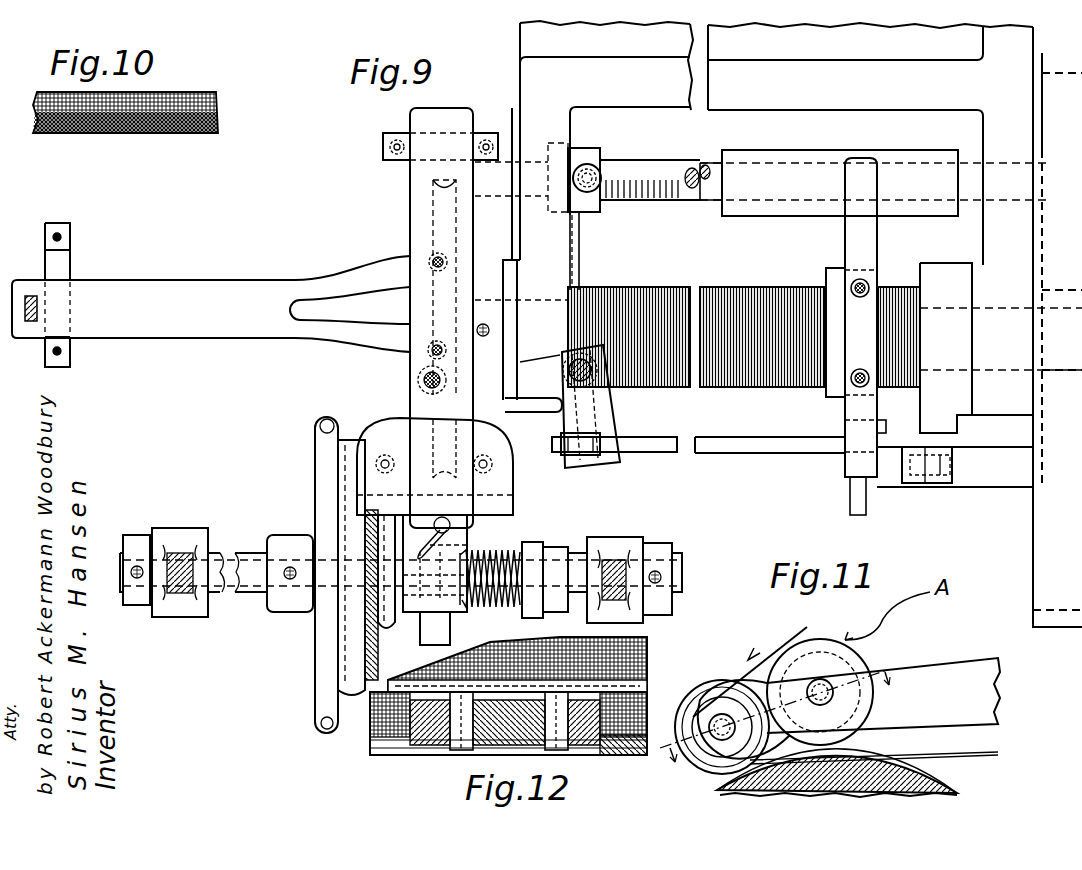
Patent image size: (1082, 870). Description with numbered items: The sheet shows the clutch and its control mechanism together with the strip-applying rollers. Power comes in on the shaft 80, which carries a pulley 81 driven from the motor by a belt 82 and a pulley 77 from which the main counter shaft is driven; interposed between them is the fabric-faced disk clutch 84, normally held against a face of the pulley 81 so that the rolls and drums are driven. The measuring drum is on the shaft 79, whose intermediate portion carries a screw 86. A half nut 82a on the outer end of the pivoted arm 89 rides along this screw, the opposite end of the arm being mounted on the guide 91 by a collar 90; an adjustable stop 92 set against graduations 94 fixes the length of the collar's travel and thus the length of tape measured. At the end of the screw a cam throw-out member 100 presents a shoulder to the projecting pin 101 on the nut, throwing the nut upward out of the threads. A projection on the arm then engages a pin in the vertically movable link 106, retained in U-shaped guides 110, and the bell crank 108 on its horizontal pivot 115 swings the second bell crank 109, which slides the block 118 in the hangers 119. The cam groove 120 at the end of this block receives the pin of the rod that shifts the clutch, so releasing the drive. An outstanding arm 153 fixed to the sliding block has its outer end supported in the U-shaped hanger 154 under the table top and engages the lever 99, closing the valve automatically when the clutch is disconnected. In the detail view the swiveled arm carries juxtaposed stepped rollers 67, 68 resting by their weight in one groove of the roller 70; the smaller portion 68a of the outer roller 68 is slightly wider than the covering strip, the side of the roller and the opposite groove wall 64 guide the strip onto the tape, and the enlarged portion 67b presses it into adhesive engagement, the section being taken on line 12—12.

In FIG. 9, the outstanding arm 153 is at (225, 292).
In FIG. 9, the U-shaped hanger 154 is at (70, 263).
In FIG. 9, the lever 99 is at (37, 308).
In FIG. 9, the hangers 119 is at (395, 162).
In FIG. 9, the horizontally slidable block 118 is at (455, 490).
In FIG. 9, the cam groove 120 is at (455, 555).
In FIG. 9, the shaft 80 is at (250, 598).
In FIG. 9, the pulley 81 is at (315, 683).
In FIG. 9, the belt 82 is at (330, 700).
In FIG. 9, the pulley 77 is at (375, 598).
In FIG. 9, the disk clutch 84 is at (380, 650).
In FIG. 9, the adjustable stop 92 is at (590, 160).
In FIG. 9, the guide 91 is at (680, 200).
In FIG. 9, the graduations 94 is at (665, 188).
In FIG. 9, the screw 86 is at (775, 387).
In FIG. 9, the pivoted arm 89 is at (877, 245).
In FIG. 9, the half nut 82a is at (832, 270).
In FIG. 9, the collar 90 is at (810, 156).
In FIG. 9, the cam throw-out member 100 is at (950, 425).
In FIG. 9, the shaft 79 is at (960, 370).
In FIG. 9, the projecting pin 101 is at (884, 421).
In FIG. 9, the bell crank 108 is at (752, 450).
In FIG. 9, the U-shaped guides 110 is at (970, 485).
In FIG. 9, the vertically movable link 106 is at (935, 483).
In FIG. 9, the second bell crank 109 is at (603, 415).
In FIG. 9, the horizontal pivot 115 is at (588, 458).
In FIG. 11, the groove wall 64 is at (915, 760).
In FIG. 11, the outer roller 68 is at (710, 680).
In FIG. 12, the outer roller 68 is at (415, 690).
In FIG. 11, the smaller portion 68a is at (712, 752).
In FIG. 12, the smaller portion 68a is at (427, 740).
In FIG. 11, the enlarged portion 67b is at (862, 655).
In FIG. 12, the enlarged portion 67b is at (612, 755).
In FIG. 12, the roller 67 is at (645, 693).
In FIG. 11, the section line 12— 12 is at (785, 714).
In FIG. 11, the grooved roller 70 is at (925, 788).